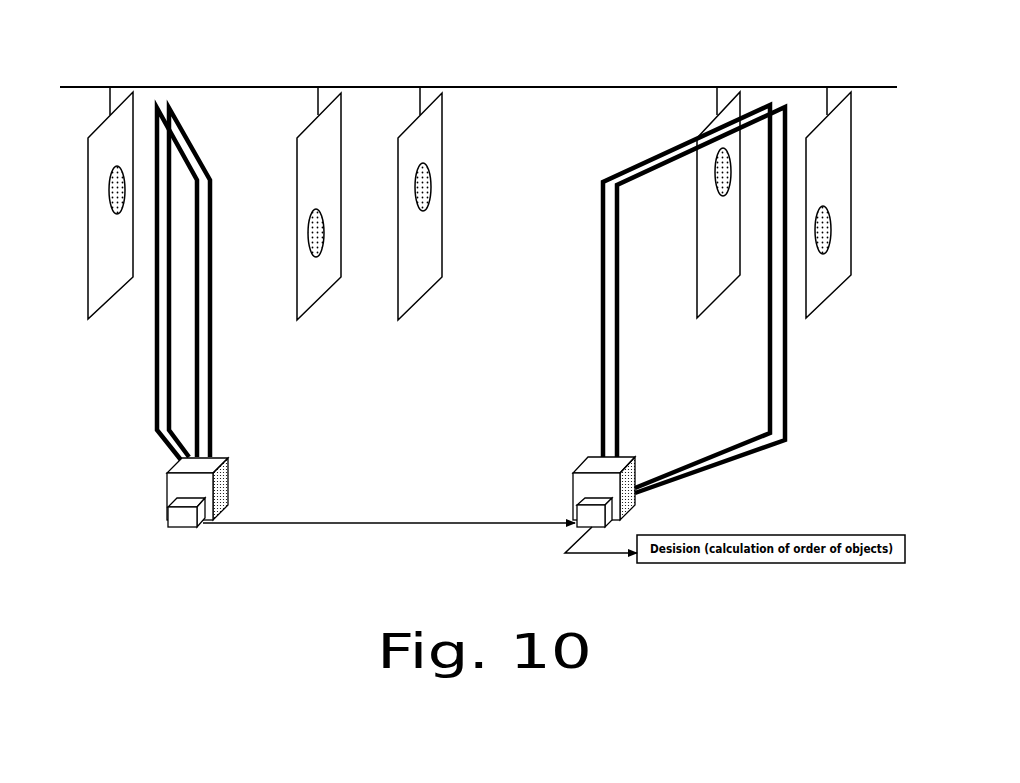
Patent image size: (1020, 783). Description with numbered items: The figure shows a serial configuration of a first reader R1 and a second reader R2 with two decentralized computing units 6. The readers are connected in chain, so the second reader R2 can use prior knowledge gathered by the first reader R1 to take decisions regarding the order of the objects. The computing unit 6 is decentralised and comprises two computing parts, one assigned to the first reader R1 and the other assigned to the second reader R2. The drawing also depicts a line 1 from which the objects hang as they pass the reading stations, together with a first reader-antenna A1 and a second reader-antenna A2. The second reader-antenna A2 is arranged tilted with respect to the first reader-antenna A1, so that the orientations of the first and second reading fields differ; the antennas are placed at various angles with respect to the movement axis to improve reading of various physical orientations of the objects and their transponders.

The conveying line 1 is at (478, 54).
The antenna of first reader A1 is at (210, 282).
The antenna of second reader A2 is at (694, 257).
The first reader R1 is at (144, 493).
The second reader R2 is at (653, 495).
The computing unit 6 is at (390, 548).